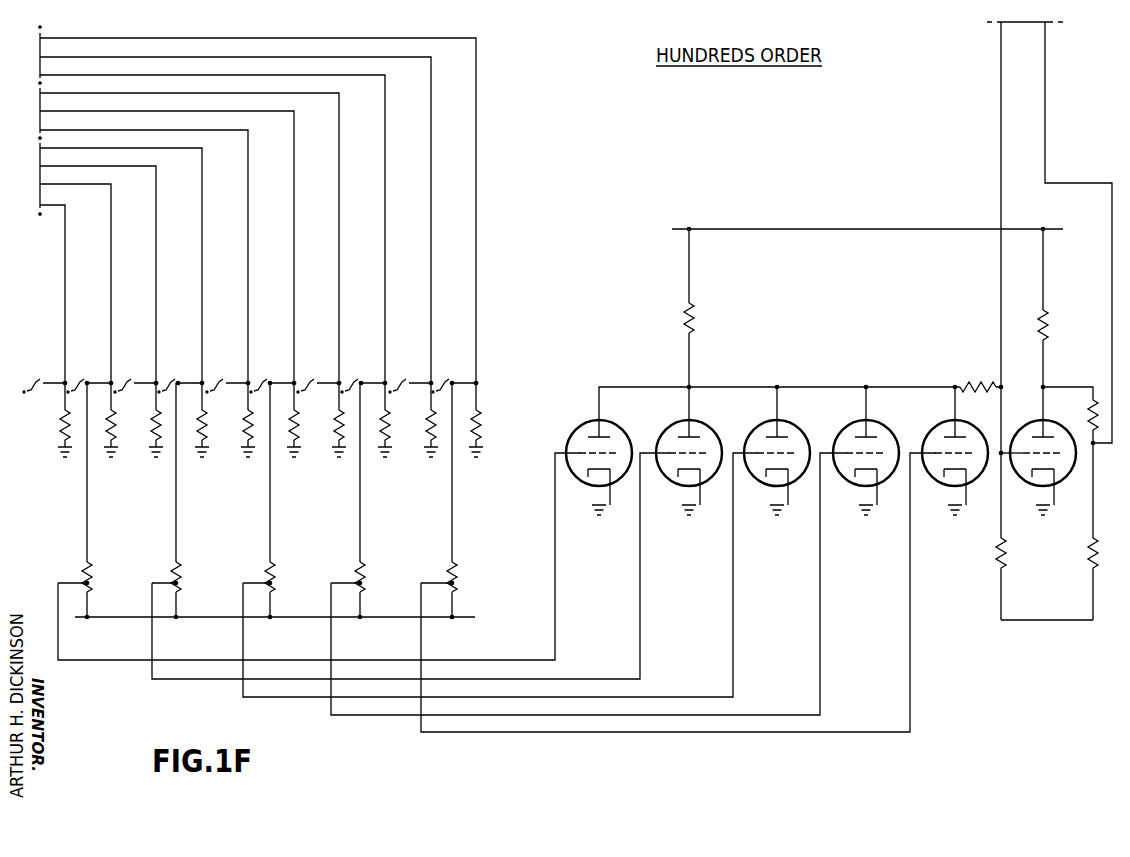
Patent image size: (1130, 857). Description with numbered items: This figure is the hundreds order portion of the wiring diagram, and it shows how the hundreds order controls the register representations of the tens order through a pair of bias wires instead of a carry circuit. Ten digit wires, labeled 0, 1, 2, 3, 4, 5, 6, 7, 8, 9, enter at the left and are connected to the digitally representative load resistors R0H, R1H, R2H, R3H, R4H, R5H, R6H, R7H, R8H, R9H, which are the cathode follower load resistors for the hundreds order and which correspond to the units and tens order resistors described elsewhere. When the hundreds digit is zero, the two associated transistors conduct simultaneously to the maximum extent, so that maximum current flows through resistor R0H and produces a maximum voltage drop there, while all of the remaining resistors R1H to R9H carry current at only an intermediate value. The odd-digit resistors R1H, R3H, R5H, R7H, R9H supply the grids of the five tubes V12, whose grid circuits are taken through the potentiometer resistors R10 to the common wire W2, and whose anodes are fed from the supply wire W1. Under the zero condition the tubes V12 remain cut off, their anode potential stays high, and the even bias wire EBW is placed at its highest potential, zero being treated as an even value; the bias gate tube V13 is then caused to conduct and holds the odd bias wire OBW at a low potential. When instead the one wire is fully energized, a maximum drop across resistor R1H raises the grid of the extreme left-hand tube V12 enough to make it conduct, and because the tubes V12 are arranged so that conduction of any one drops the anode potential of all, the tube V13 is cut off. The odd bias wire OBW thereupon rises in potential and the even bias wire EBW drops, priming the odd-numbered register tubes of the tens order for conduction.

The hundreds order digit wire 0 is at (42, 295).
The hundreds order digit wire 1 is at (65, 284).
The hundreds order digit wire 2 is at (88, 275).
The hundreds order digit wire 3 is at (111, 266).
The hundreds order digit wire 4 is at (134, 257).
The hundreds order digit wire 5 is at (157, 247).
The hundreds order digit wire 6 is at (179, 238).
The hundreds order digit wire 7 is at (202, 229).
The hundreds order digit wire 8 is at (225, 220).
The hundreds order digit wire 9 is at (248, 211).
The hundreds order load resistor R0H is at (60, 428).
The hundreds order load resistor R1H is at (117, 430).
The hundreds order load resistor R2H is at (150, 432).
The hundreds order load resistor R3H is at (208, 430).
The hundreds order load resistor R4H is at (242, 432).
The hundreds order load resistor R5H is at (300, 430).
The hundreds order load resistor R6H is at (333, 432).
The hundreds order load resistor R7H is at (391, 430).
The hundreds order load resistor R8H is at (425, 432).
The hundreds order load resistor R9H is at (482, 430).
The potentiometer resistor R10 is at (79, 591).
The supply wire W1 is at (845, 231).
The common wire W2 is at (310, 621).
The tube V12 is at (672, 424).
The bias gate V13 is at (1073, 419).
The even bias wire EBW is at (998, 296).
The odd bias wire OBW is at (1112, 290).